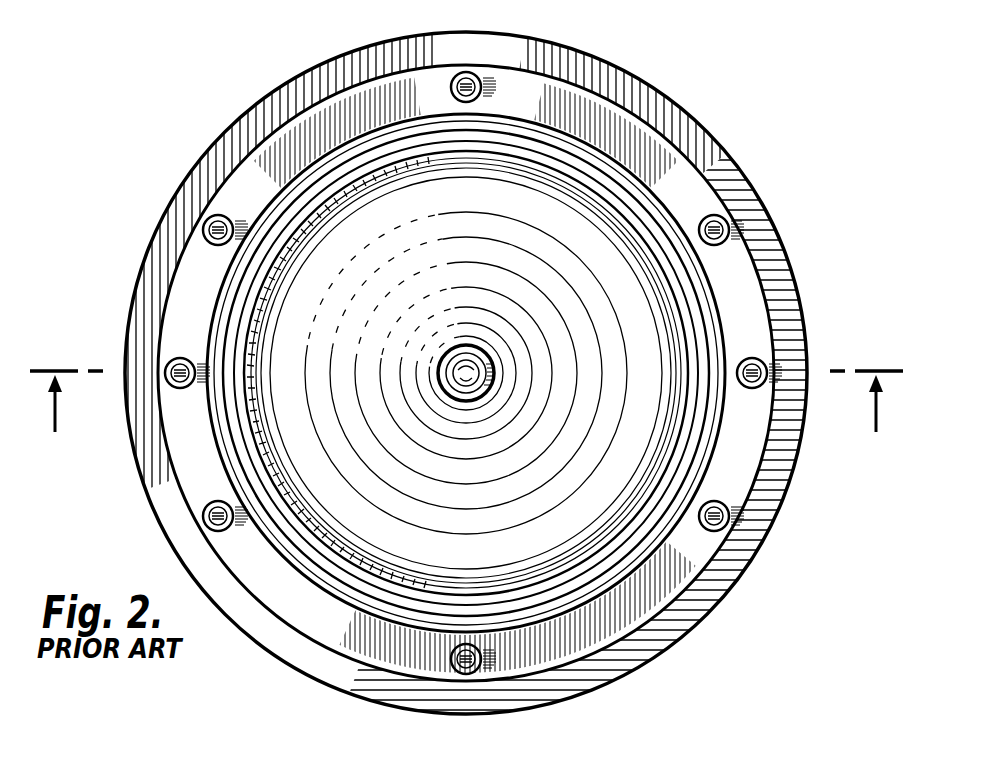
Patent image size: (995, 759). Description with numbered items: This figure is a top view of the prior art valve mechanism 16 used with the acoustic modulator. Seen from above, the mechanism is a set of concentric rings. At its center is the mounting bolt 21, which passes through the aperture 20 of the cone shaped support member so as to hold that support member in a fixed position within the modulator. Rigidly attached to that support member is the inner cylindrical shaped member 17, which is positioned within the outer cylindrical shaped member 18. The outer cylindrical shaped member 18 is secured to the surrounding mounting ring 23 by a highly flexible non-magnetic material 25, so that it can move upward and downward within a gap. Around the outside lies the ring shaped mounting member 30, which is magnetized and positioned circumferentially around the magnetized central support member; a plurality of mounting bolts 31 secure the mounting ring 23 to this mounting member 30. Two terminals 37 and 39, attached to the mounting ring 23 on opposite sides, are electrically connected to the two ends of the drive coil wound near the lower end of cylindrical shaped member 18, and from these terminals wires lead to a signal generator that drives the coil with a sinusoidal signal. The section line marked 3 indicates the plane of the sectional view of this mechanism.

The prior art valve mechanism 16 is at (735, 145).
The cylindrical shaped member 17 is at (310, 241).
The cylindrical shaped member 18 is at (675, 460).
The aperture 20 is at (446, 338).
The mounting bolt 21 is at (445, 358).
The mounting ring 23 is at (272, 145).
The highly flexible non-magnetic material 25 is at (690, 440).
The ring shaped mounting member 30 is at (618, 92).
The mounting bolts 31 is at (470, 76).
The terminal 37 is at (767, 366).
The terminal 39 is at (165, 368).
The section line 3- 3 is at (466, 420).